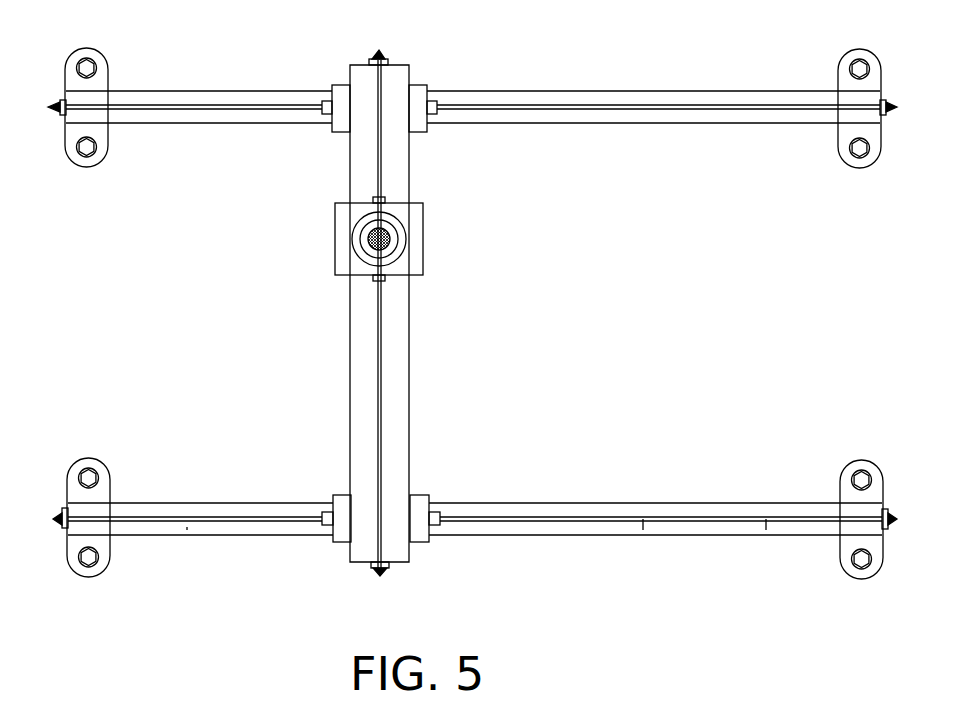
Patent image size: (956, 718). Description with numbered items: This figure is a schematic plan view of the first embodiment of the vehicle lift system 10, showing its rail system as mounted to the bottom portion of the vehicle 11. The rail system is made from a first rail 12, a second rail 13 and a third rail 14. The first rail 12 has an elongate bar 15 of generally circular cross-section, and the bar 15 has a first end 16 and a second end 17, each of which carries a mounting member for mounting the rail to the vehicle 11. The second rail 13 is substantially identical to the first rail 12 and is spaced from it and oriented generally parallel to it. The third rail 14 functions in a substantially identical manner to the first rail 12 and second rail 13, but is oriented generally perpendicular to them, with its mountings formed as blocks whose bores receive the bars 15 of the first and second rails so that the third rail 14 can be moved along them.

The vehicle lift system 10 is at (222, 67).
The vehicle 11 is at (323, 238).
The first rail 12 is at (327, 518).
The second rail 13 is at (608, 94).
The third rail 14 is at (409, 163).
The elongate bar 15 is at (530, 535).
The first end 16 is at (73, 527).
The second end 17 is at (883, 505).